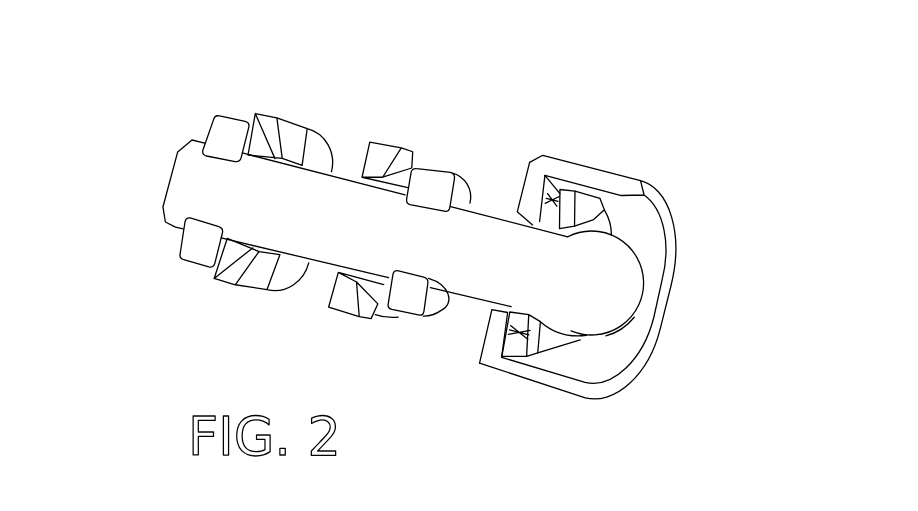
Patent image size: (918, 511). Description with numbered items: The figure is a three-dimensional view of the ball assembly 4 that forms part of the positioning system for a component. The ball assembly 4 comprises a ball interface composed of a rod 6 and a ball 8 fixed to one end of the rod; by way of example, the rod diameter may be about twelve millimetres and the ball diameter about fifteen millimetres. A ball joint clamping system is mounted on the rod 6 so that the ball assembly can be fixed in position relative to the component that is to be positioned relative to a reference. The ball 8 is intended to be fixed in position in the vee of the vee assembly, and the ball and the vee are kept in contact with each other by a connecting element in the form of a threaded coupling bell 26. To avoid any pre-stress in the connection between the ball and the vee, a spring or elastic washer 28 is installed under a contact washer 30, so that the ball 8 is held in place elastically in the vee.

The ball assembly 4 is at (455, 114).
The rod 6 is at (345, 254).
The ball 8 is at (617, 303).
The threaded coupling bell 26 is at (598, 398).
The spring or elastic washer 28 is at (500, 332).
The contact washer 30 is at (532, 345).